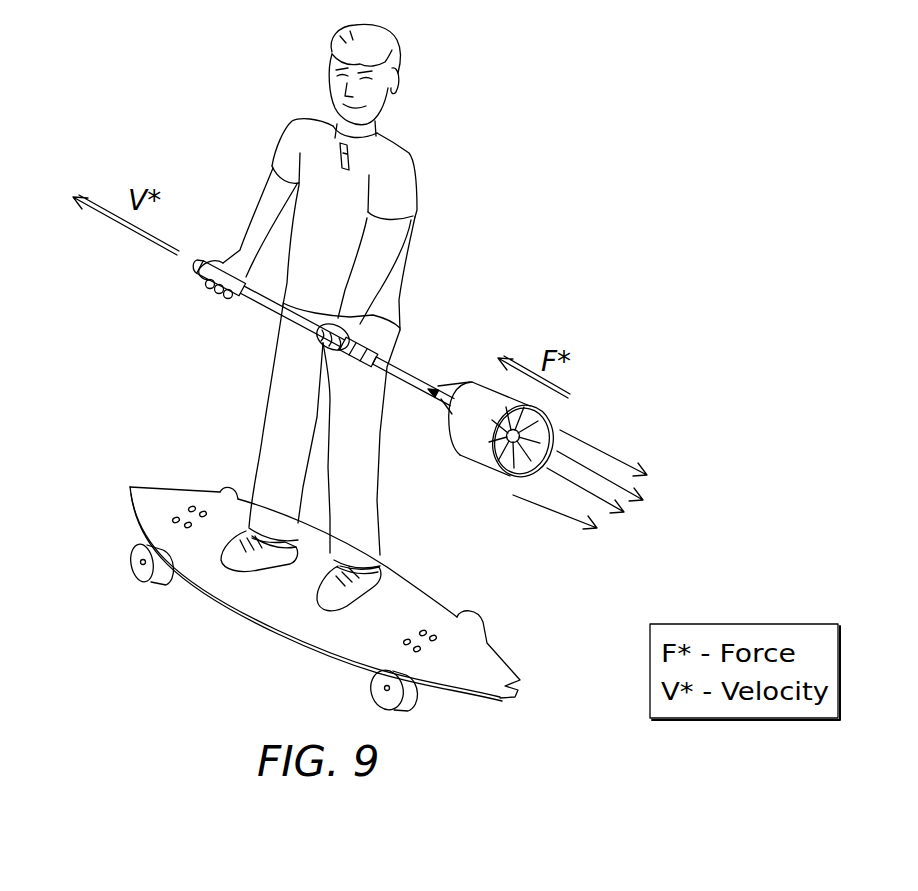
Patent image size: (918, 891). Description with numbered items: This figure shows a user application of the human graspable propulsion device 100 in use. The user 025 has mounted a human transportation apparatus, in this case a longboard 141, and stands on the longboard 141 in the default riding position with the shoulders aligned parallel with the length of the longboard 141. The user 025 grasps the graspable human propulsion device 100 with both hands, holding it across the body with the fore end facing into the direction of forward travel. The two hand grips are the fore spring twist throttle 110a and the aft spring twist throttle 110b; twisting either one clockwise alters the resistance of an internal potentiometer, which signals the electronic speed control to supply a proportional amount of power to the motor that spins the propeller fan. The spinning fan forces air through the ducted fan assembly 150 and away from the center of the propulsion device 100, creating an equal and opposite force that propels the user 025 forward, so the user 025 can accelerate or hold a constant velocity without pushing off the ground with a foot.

The user 025 is at (416, 166).
The human graspable propulsion device 100 is at (258, 324).
The fore spring twist throttle 110a is at (203, 281).
The aft spring twist throttle 110b is at (363, 347).
The ducted fan assembly 150 is at (489, 480).
The longboard 141 is at (200, 590).